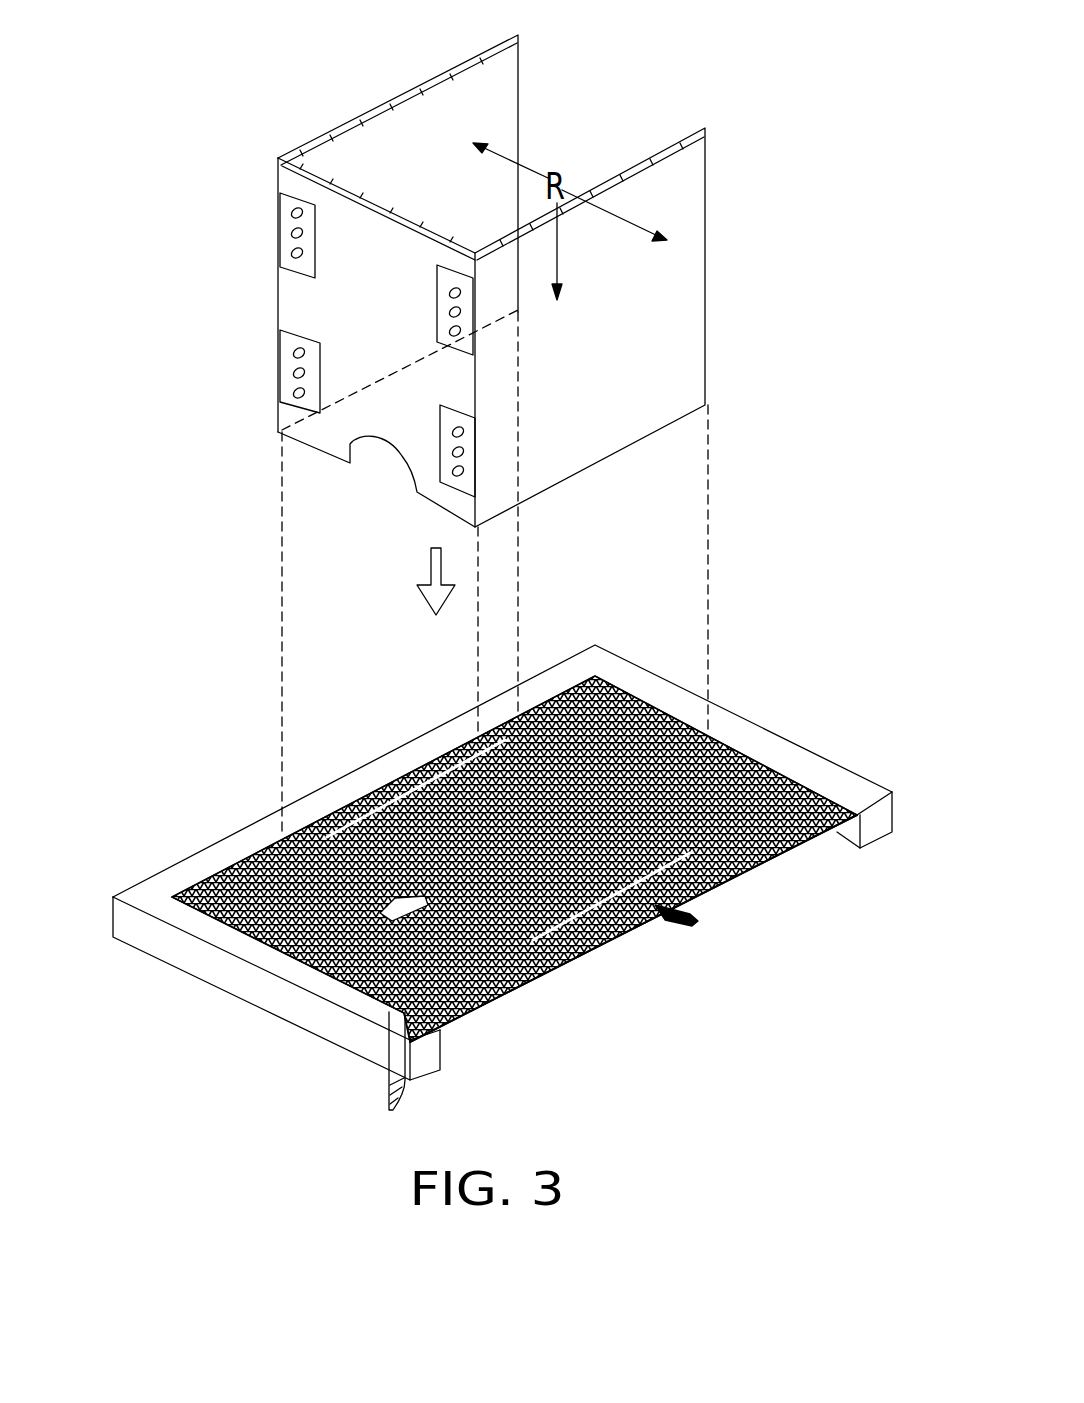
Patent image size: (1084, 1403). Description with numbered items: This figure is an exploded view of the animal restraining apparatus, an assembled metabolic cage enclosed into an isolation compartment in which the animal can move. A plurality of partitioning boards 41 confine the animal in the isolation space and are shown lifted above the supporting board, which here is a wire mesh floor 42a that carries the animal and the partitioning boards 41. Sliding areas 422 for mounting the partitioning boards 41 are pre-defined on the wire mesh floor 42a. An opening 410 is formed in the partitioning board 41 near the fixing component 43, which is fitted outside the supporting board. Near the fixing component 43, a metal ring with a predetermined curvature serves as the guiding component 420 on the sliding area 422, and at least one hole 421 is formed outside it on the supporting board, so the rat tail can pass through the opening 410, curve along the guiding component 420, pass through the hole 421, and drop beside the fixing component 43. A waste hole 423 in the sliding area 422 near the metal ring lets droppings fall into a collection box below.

The partitioning board 41 is at (425, 112).
The opening 410 is at (373, 458).
The guiding component 420 is at (297, 962).
The hole 421 is at (353, 993).
The sliding area 422 is at (514, 859).
The waste hole 423 is at (383, 787).
The wire mesh floor 42a is at (773, 860).
The fixing component 43 is at (403, 1087).